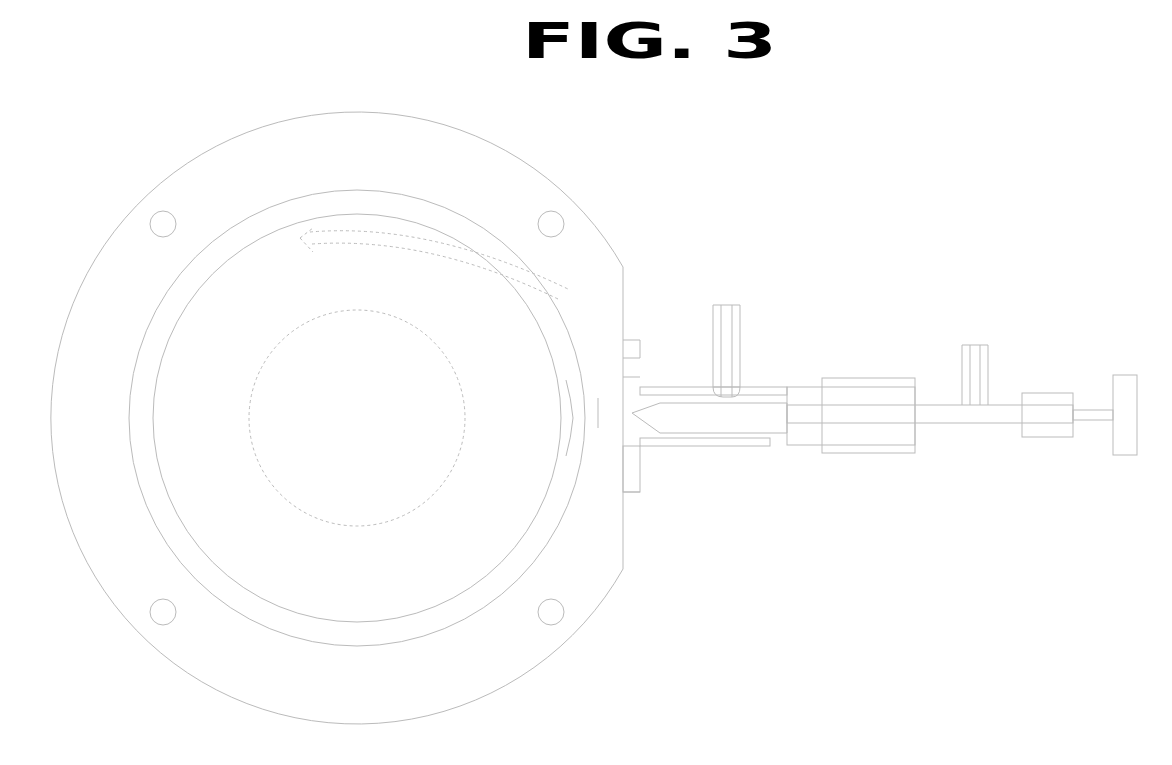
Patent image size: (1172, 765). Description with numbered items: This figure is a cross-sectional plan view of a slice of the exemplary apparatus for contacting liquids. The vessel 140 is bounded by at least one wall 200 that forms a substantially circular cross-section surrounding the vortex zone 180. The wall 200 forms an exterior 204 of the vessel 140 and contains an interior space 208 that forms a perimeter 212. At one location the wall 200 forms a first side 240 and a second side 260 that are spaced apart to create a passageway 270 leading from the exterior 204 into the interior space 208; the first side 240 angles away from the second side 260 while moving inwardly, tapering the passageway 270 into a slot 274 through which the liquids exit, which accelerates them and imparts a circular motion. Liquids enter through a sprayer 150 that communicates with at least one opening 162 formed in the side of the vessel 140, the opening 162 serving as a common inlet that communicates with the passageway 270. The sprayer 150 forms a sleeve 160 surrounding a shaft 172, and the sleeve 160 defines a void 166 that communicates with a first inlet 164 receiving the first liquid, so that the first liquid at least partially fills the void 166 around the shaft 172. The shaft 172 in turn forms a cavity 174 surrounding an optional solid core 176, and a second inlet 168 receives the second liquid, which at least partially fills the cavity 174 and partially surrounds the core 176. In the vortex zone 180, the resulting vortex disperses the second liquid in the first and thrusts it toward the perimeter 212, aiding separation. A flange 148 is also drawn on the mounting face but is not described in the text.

The vessel 140 is at (328, 381).
The mounting flange 148 is at (640, 497).
The sprayer 150 is at (913, 457).
The sleeve 160 is at (853, 394).
The opening 162 is at (597, 398).
The first inlet 164 is at (742, 318).
The void 166 is at (684, 386).
The second inlet 168 is at (990, 352).
The shaft 172 is at (753, 447).
The cavity 174 is at (668, 386).
The solid core 176 is at (677, 458).
The vortex zone 180 is at (435, 363).
The wall 200 is at (405, 112).
The exterior 204 is at (625, 548).
The interior space 208 is at (357, 418).
The perimeter 212 is at (357, 316).
The first side 240 is at (630, 500).
The second side 260 is at (557, 378).
The passageway 270 is at (550, 428).
The slot 274 is at (537, 320).